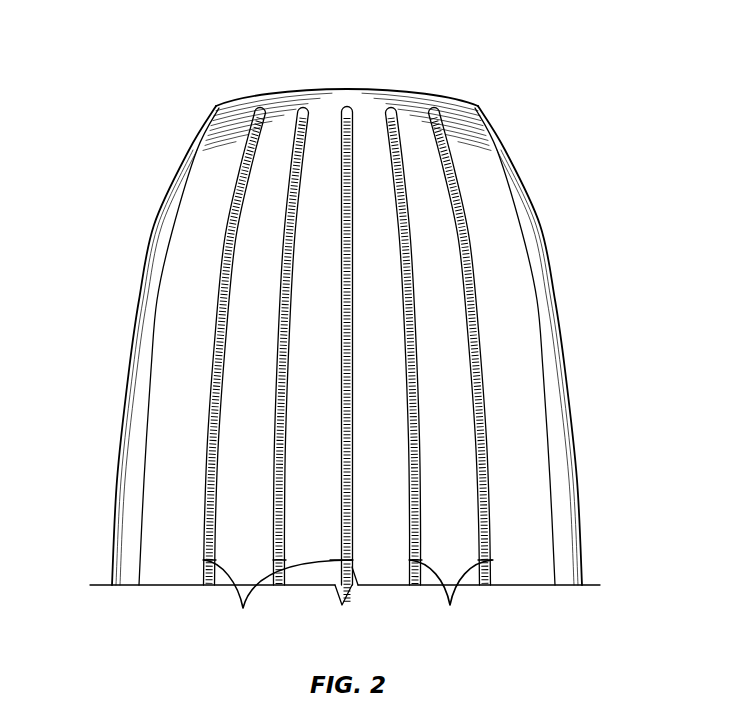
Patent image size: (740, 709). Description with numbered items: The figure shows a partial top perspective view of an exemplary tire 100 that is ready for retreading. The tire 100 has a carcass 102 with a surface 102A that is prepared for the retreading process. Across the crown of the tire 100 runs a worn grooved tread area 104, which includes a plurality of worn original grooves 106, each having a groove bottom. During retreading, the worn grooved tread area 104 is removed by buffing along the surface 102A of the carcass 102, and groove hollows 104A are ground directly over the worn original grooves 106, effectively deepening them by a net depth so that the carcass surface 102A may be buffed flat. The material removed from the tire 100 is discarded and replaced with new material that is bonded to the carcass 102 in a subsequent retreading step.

The tire 100 is at (545, 66).
The carcass 102 is at (556, 368).
The surface 102A is at (240, 483).
The worn grooved tread area 104 is at (257, 330).
The groove hollows 104A is at (302, 110).
The worn original grooves 106 is at (348, 600).